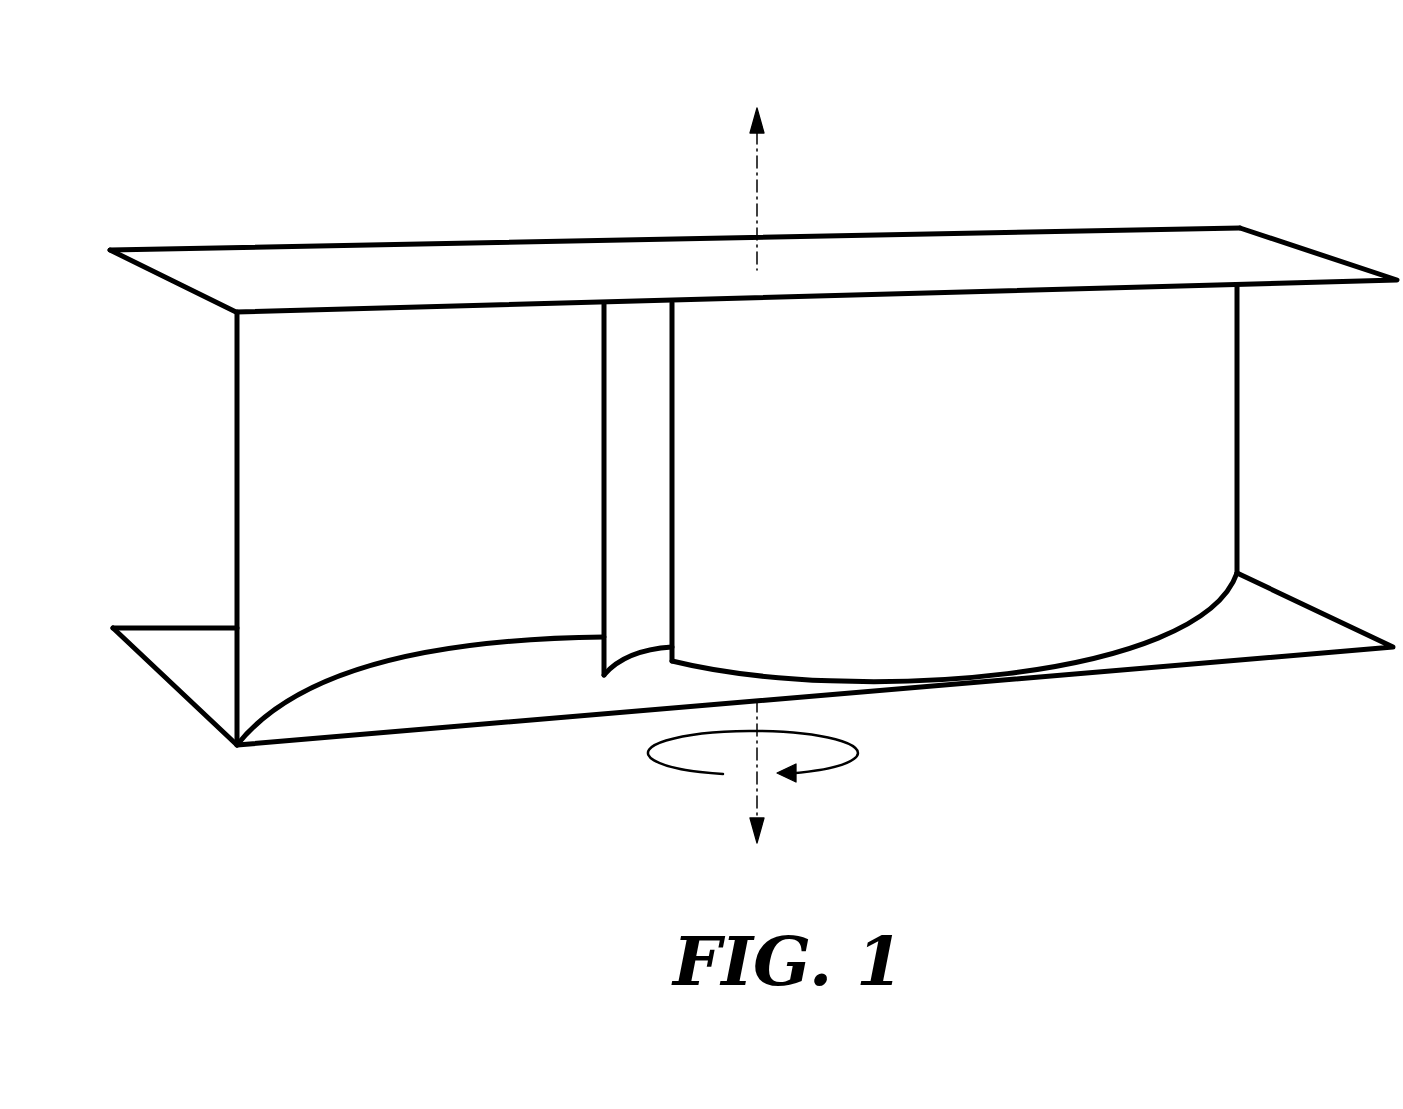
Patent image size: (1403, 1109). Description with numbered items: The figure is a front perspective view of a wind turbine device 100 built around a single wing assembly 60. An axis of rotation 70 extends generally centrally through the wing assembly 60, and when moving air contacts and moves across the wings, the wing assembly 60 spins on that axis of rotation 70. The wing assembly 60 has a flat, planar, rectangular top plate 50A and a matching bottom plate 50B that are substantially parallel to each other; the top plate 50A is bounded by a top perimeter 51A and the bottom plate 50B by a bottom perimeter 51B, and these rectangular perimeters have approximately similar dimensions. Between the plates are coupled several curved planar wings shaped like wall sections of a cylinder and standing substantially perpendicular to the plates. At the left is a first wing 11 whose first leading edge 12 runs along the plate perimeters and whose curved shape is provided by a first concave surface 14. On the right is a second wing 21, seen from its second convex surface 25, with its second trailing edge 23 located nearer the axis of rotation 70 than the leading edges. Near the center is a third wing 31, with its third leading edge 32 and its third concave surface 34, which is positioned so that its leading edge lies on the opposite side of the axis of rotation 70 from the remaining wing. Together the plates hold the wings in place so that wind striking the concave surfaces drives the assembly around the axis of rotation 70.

The wind turbine device 100 is at (289, 132).
The top plate 50A is at (987, 267).
The top perimeter 51A is at (172, 248).
The wing assembly 60 is at (565, 221).
The bottom plate 50B is at (207, 660).
The bottom perimeter 51B is at (140, 628).
The first wing 11 is at (308, 545).
The first leading edge 12 is at (237, 405).
The first concave surface 14 is at (434, 613).
The third wing 31 is at (638, 409).
The third leading edge 32 is at (604, 478).
The second trailing edge 23 is at (672, 502).
The third concave surface 34 is at (657, 557).
The second wing 21 is at (1150, 497).
The second convex surface 25 is at (1044, 639).
The axis of rotation 70 is at (757, 205).